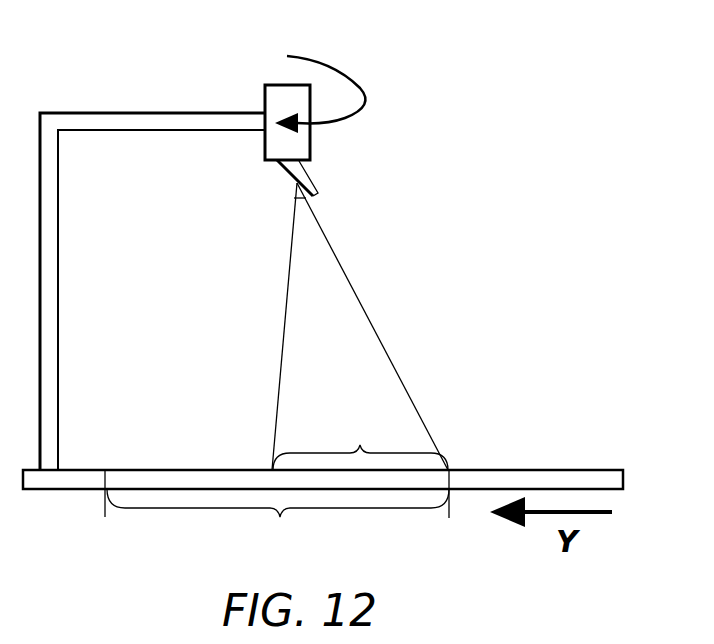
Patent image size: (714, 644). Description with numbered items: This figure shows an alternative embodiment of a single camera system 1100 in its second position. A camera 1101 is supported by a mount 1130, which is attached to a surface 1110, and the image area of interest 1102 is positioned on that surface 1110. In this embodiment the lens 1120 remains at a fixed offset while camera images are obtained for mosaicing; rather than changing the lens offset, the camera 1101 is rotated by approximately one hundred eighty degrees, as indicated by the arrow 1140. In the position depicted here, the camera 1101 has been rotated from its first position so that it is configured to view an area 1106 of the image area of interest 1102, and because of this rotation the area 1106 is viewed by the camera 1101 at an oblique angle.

The camera system 1100 is at (526, 144).
The camera 1101 is at (271, 92).
The image area of interest 1102 is at (277, 508).
The area 1106 is at (360, 326).
The surface 1110 is at (510, 470).
The lens 1120 is at (295, 170).
The mount 1130 is at (160, 113).
The arrow 1140 is at (360, 88).